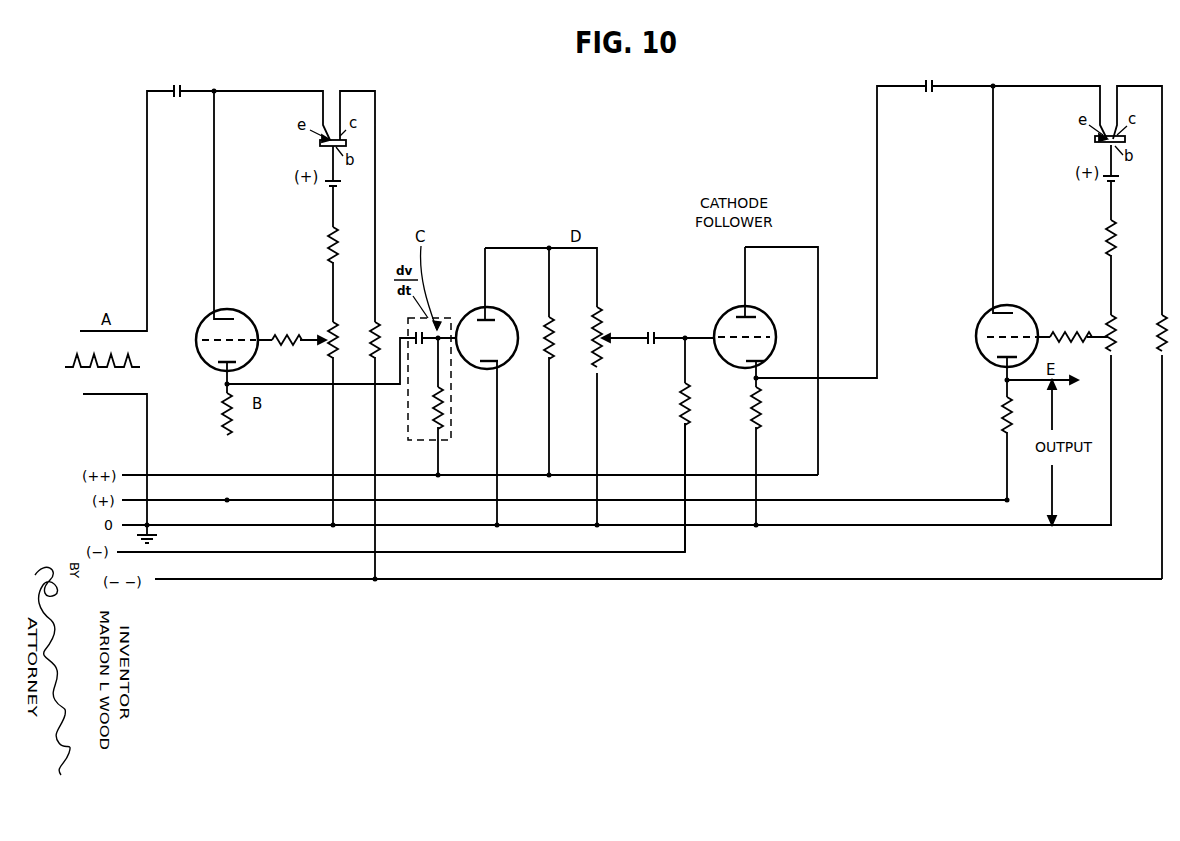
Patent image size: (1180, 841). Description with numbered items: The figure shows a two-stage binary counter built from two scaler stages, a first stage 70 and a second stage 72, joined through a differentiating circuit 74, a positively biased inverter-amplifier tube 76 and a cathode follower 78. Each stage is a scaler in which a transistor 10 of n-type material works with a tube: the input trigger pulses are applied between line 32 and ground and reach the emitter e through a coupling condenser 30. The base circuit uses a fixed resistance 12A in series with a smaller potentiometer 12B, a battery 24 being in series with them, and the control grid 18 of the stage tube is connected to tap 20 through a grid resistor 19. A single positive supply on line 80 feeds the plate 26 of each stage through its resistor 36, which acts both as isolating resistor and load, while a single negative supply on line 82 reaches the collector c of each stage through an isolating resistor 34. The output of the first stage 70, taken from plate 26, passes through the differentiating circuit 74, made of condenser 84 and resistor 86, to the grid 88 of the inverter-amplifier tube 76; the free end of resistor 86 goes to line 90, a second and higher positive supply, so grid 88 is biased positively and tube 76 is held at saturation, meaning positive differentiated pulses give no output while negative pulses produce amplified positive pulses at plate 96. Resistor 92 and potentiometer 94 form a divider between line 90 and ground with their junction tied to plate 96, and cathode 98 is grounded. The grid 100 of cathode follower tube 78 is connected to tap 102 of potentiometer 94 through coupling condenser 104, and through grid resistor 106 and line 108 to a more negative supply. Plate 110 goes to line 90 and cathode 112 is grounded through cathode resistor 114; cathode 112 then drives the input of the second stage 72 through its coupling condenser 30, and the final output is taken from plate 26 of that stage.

The line 32 is at (100, 329).
The coupling condenser 30 is at (182, 89).
The transistor 10 is at (318, 144).
The battery 24 is at (326, 187).
The fixed resistance 12A is at (328, 250).
The potentiometer 12B is at (339, 330).
The tap 20 is at (328, 336).
The grid resistor 19 is at (283, 347).
The isolating resistor 34 is at (372, 348).
The first stage 70 is at (262, 304).
The control grid 18 is at (206, 339).
The plate 26 is at (218, 366).
The resistor 36 is at (232, 418).
The line 90 is at (160, 475).
The line 80 is at (164, 500).
The line 108 is at (194, 552).
The line 82 is at (194, 579).
The differentiating circuit 74 is at (452, 407).
The condenser 84 is at (425, 345).
The resistor 86 is at (432, 425).
The grid 88 is at (470, 337).
The inverter-amplifier tube 76 is at (507, 310).
The plate 96 is at (482, 314).
The cathode 98 is at (490, 366).
The resistor 92 is at (546, 356).
The potentiometer 94 is at (594, 360).
The tap 102 is at (614, 334).
The coupling condenser 104 is at (652, 345).
The grid resistor 106 is at (680, 410).
The cathode follower 78 is at (726, 314).
The plate 110 is at (757, 314).
The grid 100 is at (760, 335).
The cathode 112 is at (746, 366).
The cathode resistor 114 is at (752, 430).
The second stage 72 is at (1050, 301).